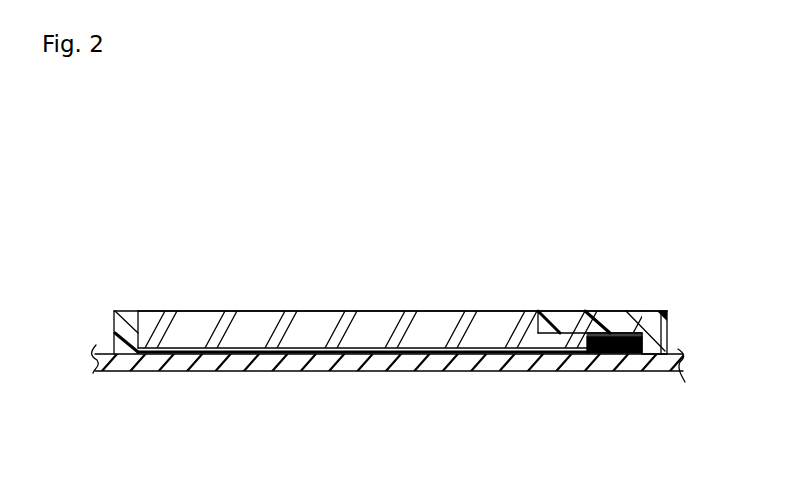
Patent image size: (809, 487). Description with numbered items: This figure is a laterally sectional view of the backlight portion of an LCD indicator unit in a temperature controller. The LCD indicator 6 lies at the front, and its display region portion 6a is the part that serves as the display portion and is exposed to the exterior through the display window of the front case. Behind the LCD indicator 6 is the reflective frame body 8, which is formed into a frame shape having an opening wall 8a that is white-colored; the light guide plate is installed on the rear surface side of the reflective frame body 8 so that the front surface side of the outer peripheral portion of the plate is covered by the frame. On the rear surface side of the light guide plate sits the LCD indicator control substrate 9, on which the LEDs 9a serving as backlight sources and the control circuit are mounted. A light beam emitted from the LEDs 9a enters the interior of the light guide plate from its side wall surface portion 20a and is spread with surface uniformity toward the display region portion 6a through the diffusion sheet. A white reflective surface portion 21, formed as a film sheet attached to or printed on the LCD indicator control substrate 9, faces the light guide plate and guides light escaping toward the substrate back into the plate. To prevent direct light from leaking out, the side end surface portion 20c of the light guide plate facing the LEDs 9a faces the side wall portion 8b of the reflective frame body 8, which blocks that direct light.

The LCD indicator 6 is at (271, 300).
The display region portion 6a is at (393, 310).
The reflective frame body 8 is at (672, 328).
The opening wall 8a is at (532, 327).
The side wall portion 8b is at (648, 311).
The LCD indicator control substrate 9 is at (173, 372).
The LEDs 9a is at (612, 355).
The side wall surface portion 20a is at (605, 333).
The side end surface portion 20c is at (585, 333).
The white reflective surface portion 21 is at (323, 356).